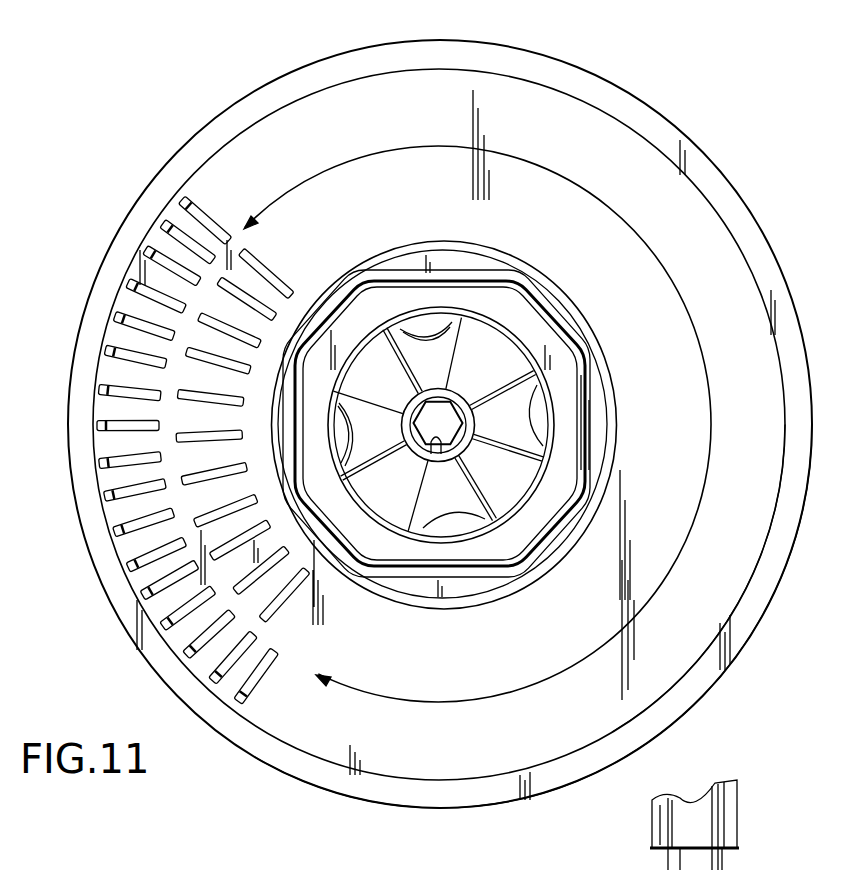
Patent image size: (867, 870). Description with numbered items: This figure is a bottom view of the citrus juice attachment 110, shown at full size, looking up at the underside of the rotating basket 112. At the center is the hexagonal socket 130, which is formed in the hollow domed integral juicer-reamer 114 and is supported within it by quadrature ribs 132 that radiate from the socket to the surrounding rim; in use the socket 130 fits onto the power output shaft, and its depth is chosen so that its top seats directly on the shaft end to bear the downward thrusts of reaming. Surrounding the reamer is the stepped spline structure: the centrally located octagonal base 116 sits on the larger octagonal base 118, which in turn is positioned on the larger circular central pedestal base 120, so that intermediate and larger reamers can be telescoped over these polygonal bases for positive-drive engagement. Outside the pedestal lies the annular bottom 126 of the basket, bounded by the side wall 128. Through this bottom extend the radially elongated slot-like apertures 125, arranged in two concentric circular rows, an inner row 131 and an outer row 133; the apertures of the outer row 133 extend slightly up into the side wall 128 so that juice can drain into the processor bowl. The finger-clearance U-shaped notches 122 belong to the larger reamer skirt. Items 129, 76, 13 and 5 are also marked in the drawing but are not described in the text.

The citrus juice attachment 110 is at (725, 129).
The rotating basket 112 is at (760, 203).
The juicer-reamer 114 is at (494, 342).
The octagonal base 116 is at (540, 332).
The larger octagonal base 118 is at (578, 346).
The circular central pedestal base 120 is at (607, 370).
The U-shaped notches 122 is at (424, 814).
The radially elongated apertures 125 is at (205, 472).
The annular bottom 126 is at (155, 573).
The side wall 128 is at (735, 617).
The outer rim 129 is at (777, 592).
The socket 130 is at (441, 450).
The inner circular row 131 is at (274, 246).
The quadrature ribs 132 is at (461, 350).
The outer circular row 133 is at (214, 192).
The bracket 76 is at (737, 806).
The bracket 13 is at (692, 815).
The support legs 5 is at (814, 866).